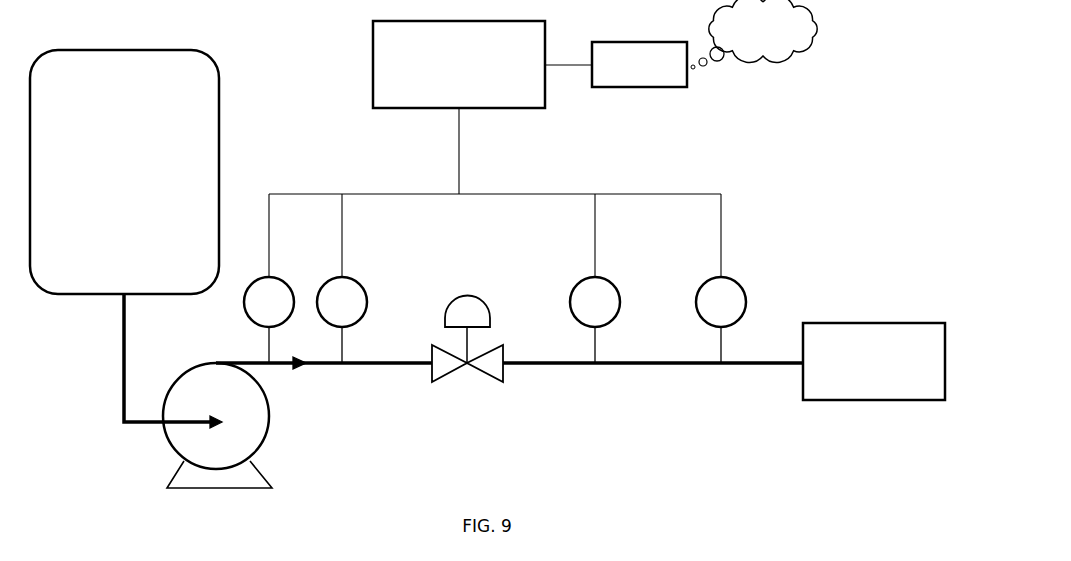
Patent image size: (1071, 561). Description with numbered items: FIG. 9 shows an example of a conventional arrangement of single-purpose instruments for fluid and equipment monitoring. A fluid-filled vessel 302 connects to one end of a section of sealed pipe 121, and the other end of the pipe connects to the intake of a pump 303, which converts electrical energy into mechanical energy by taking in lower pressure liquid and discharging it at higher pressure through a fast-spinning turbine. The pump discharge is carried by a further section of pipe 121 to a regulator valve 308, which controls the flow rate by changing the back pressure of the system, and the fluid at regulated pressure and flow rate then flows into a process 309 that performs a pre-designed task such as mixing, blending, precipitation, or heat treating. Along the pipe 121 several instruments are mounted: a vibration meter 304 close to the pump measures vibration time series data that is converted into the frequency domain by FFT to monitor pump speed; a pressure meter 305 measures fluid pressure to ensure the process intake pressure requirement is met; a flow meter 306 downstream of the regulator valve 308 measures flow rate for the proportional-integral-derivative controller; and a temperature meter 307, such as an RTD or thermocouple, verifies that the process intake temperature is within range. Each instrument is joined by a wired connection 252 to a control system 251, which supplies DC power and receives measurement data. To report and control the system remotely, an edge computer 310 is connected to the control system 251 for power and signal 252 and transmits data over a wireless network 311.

The sealed pipe 121 is at (128, 332).
The control system 251 is at (540, 97).
The wired connection 252 is at (573, 62).
The vessel 302 is at (211, 151).
The pump 303 is at (272, 419).
The vibration meter 304 is at (287, 282).
The pressure meter 305 is at (362, 282).
The flow meter 306 is at (620, 284).
The temperature meter 307 is at (745, 287).
The regulator valve 308 is at (492, 313).
The process 309 is at (881, 322).
The edge computer 310 is at (693, 86).
The wireless network 311 is at (802, 52).